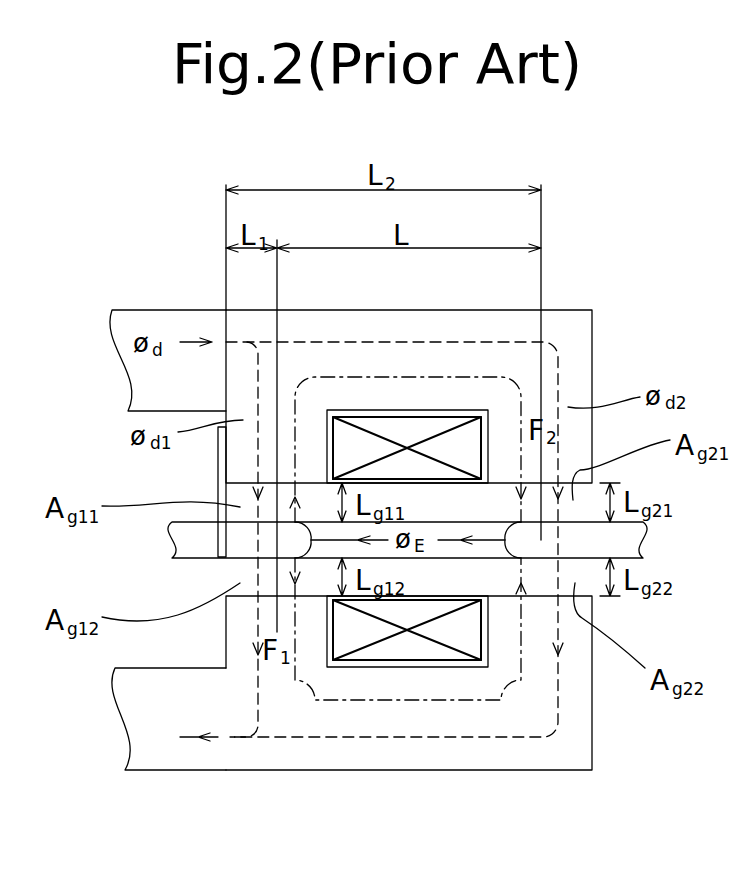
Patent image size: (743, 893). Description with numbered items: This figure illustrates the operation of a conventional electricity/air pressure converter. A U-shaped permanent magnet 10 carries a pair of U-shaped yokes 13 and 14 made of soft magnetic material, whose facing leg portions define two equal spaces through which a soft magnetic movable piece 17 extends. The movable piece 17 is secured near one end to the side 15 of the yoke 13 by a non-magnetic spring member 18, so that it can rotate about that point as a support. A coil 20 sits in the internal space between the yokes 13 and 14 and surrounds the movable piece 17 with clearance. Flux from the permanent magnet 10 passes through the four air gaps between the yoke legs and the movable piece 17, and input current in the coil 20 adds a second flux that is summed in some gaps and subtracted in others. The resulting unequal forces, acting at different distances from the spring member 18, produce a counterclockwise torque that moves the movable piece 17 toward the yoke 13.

The permanent magnet 10 is at (155, 755).
The yoke 13 is at (580, 345).
The yoke 14 is at (561, 752).
The side of yoke 15 is at (226, 330).
The movable piece 17 is at (183, 535).
The spring member 18 is at (217, 468).
The coil 20 is at (405, 642).